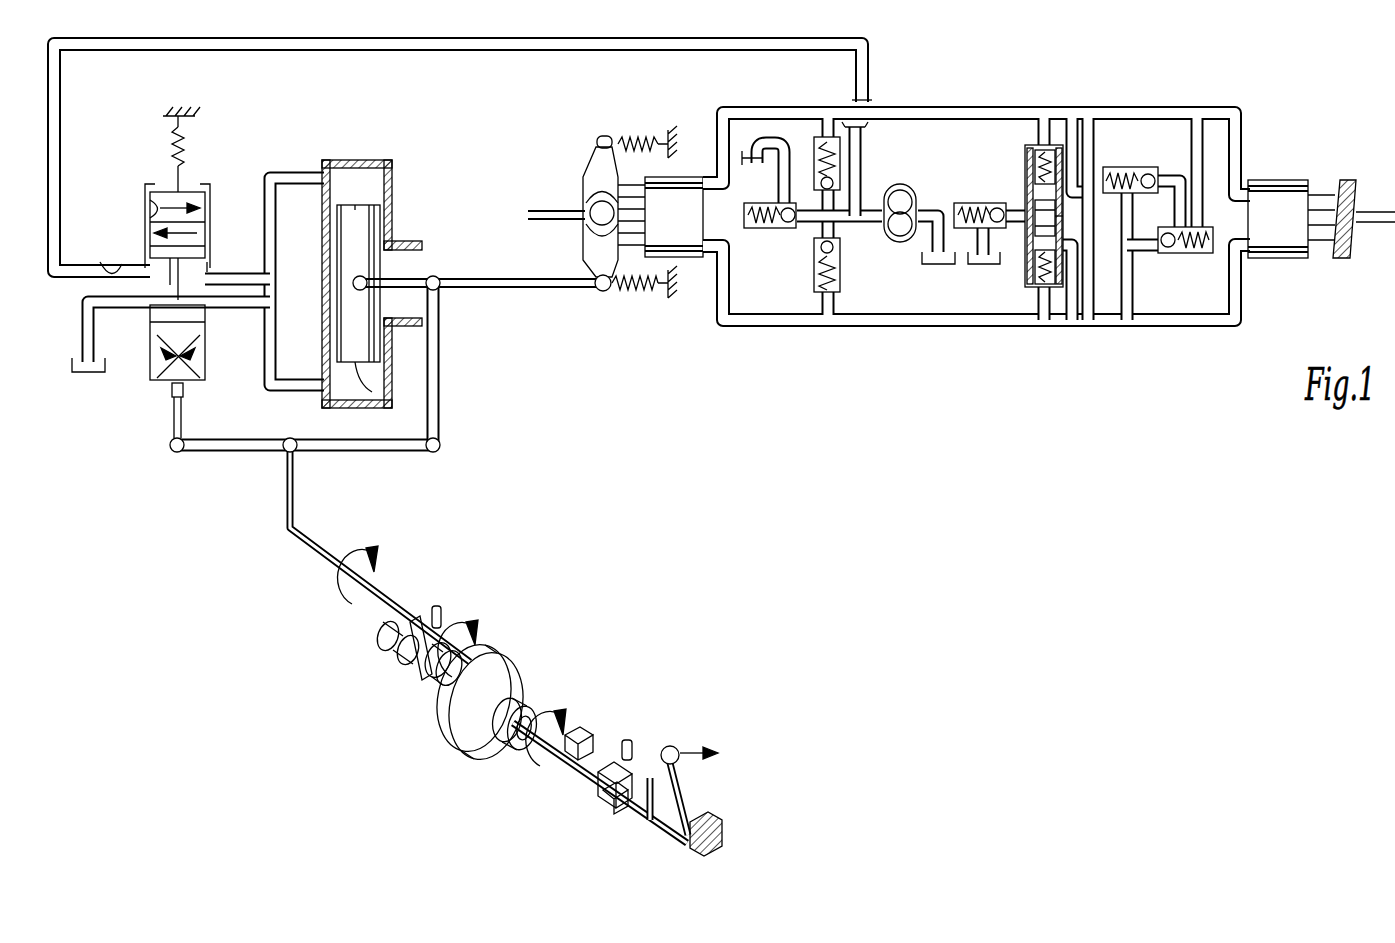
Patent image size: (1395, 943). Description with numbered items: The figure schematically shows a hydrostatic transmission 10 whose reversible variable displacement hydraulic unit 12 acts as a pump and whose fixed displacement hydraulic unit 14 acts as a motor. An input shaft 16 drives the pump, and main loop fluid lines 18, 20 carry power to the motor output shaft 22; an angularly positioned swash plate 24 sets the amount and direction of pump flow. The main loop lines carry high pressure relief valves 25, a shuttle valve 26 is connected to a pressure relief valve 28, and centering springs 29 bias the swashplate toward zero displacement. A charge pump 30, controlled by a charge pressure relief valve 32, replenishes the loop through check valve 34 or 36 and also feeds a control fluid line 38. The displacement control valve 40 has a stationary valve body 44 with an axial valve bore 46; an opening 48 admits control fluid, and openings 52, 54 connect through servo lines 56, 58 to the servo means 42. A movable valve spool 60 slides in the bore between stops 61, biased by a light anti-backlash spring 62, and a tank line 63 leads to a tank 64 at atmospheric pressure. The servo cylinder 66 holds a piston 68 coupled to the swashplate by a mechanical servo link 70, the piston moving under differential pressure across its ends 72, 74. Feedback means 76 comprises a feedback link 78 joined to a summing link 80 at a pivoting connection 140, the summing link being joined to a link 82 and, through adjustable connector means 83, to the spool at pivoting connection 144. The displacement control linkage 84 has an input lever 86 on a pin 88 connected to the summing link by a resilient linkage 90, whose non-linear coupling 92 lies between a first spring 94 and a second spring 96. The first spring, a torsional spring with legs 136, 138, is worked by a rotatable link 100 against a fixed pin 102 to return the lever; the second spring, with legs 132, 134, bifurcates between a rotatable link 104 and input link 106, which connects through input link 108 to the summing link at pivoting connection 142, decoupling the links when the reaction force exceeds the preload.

The hydrostatic transmission 10 is at (976, 221).
The reversible variable displacement hydraulic unit 12 is at (674, 217).
The fixed displacement hydraulic unit 14 is at (1321, 197).
The input shaft 16 is at (573, 212).
The main loop fluid line 18 is at (898, 110).
The main loop fluid line 20 is at (1016, 326).
The motor output shaft 22 is at (1376, 212).
The swash plate 24 is at (593, 213).
The high pressure relief valves 25 is at (1118, 167).
The shuttle valve 26 is at (1062, 290).
The pressure relief valve 28 is at (966, 202).
The swashplate centering springs 29 is at (648, 130).
The charge pump 30 is at (912, 182).
The charge pressure relief valve 32 is at (770, 235).
The check valve 34 is at (832, 152).
The check valve 36 is at (840, 286).
The control fluid line 38 is at (677, 50).
The displacement control valve 40 is at (258, 126).
The servo means 42 is at (366, 287).
The valve body 44 is at (165, 203).
The valve bore 46 is at (150, 205).
The opening 48 is at (152, 258).
The opening 52 is at (210, 262).
The opening 54 is at (222, 298).
The servo line 56 is at (297, 174).
The servo line 58 is at (292, 396).
The valve spool 60 is at (108, 264).
The stops 61 is at (160, 200).
The anti-backlash spring 62 is at (170, 155).
The tank line 63 is at (112, 310).
The tank 64 is at (85, 378).
The servo cylinder 66 is at (392, 190).
The servo piston 68 is at (358, 236).
The mechanical servo link 70 is at (510, 290).
The piston end 72 is at (355, 205).
The piston end 74 is at (400, 405).
The feedback means 76 is at (450, 381).
The feedback link 78 is at (440, 351).
The summing link 80 is at (218, 452).
The link 82 is at (174, 425).
The adjustable connector means 83 is at (170, 397).
The displacement control linkage 84 is at (511, 704).
The input lever 86 is at (686, 786).
The pin 88 is at (690, 840).
The resilient linkage 90 is at (425, 729).
The non-linear coupling 92 is at (525, 673).
The first spring 94 is at (615, 814).
The second spring 96 is at (418, 672).
The rotatable link 100 is at (580, 762).
The fixed pin 102 is at (582, 726).
The rotatable link 104 is at (492, 638).
The input link 106 is at (404, 602).
The input link 108 is at (295, 497).
The spring leg 132 is at (400, 650).
The spring leg 134 is at (441, 606).
The spring leg 136 is at (606, 796).
The spring leg 138 is at (627, 740).
The pivoting connection 140 is at (443, 440).
The pivoting connection 142 is at (297, 458).
The pivoting connection 144 is at (177, 458).